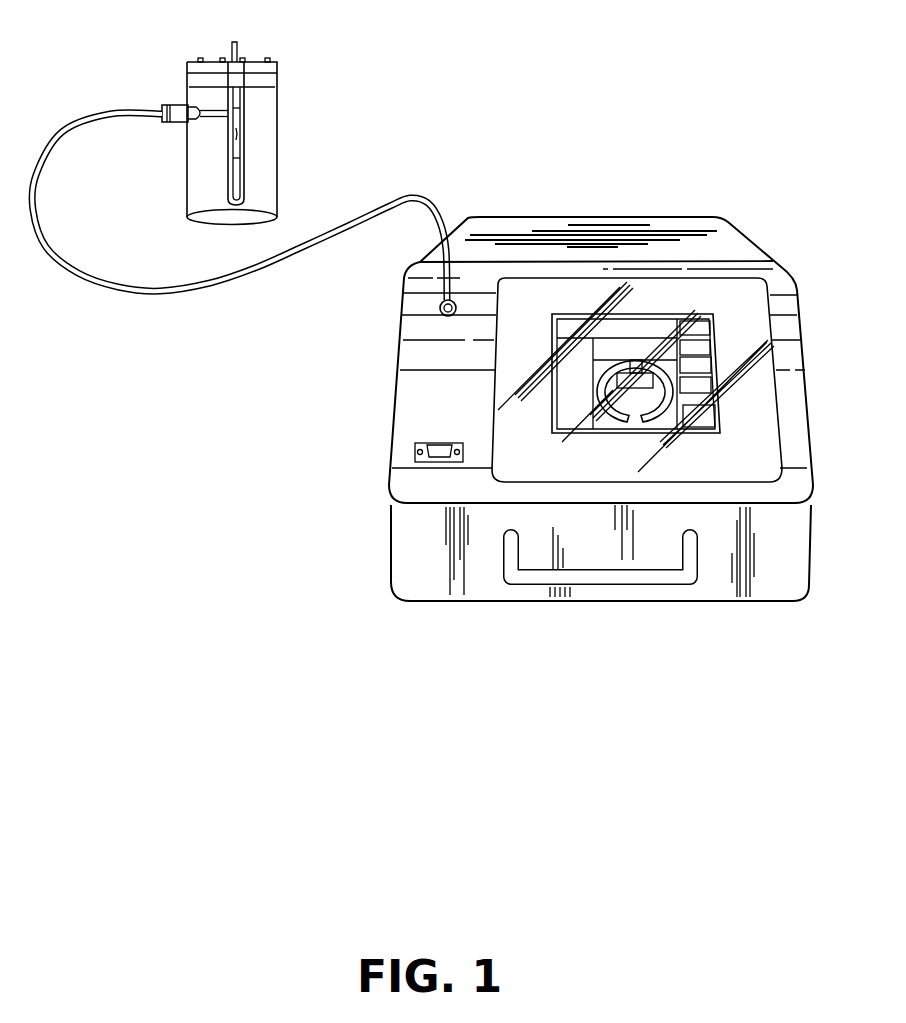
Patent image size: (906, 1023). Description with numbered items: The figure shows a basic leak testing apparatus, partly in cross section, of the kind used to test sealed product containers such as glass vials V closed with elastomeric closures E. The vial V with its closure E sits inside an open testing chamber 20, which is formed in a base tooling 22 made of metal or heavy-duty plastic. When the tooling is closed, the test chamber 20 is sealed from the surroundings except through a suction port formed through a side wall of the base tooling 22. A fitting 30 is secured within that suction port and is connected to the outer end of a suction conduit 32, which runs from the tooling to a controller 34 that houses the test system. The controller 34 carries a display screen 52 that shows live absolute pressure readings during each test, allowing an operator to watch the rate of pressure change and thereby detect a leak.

The testing chamber 20 is at (240, 173).
The base tooling 22 is at (187, 177).
The fitting 30 is at (178, 102).
The suction conduit 32 is at (192, 292).
The controller 34 is at (387, 543).
The display screen 52 is at (628, 407).
The elastomeric closure E is at (240, 95).
The glass vial V is at (240, 135).